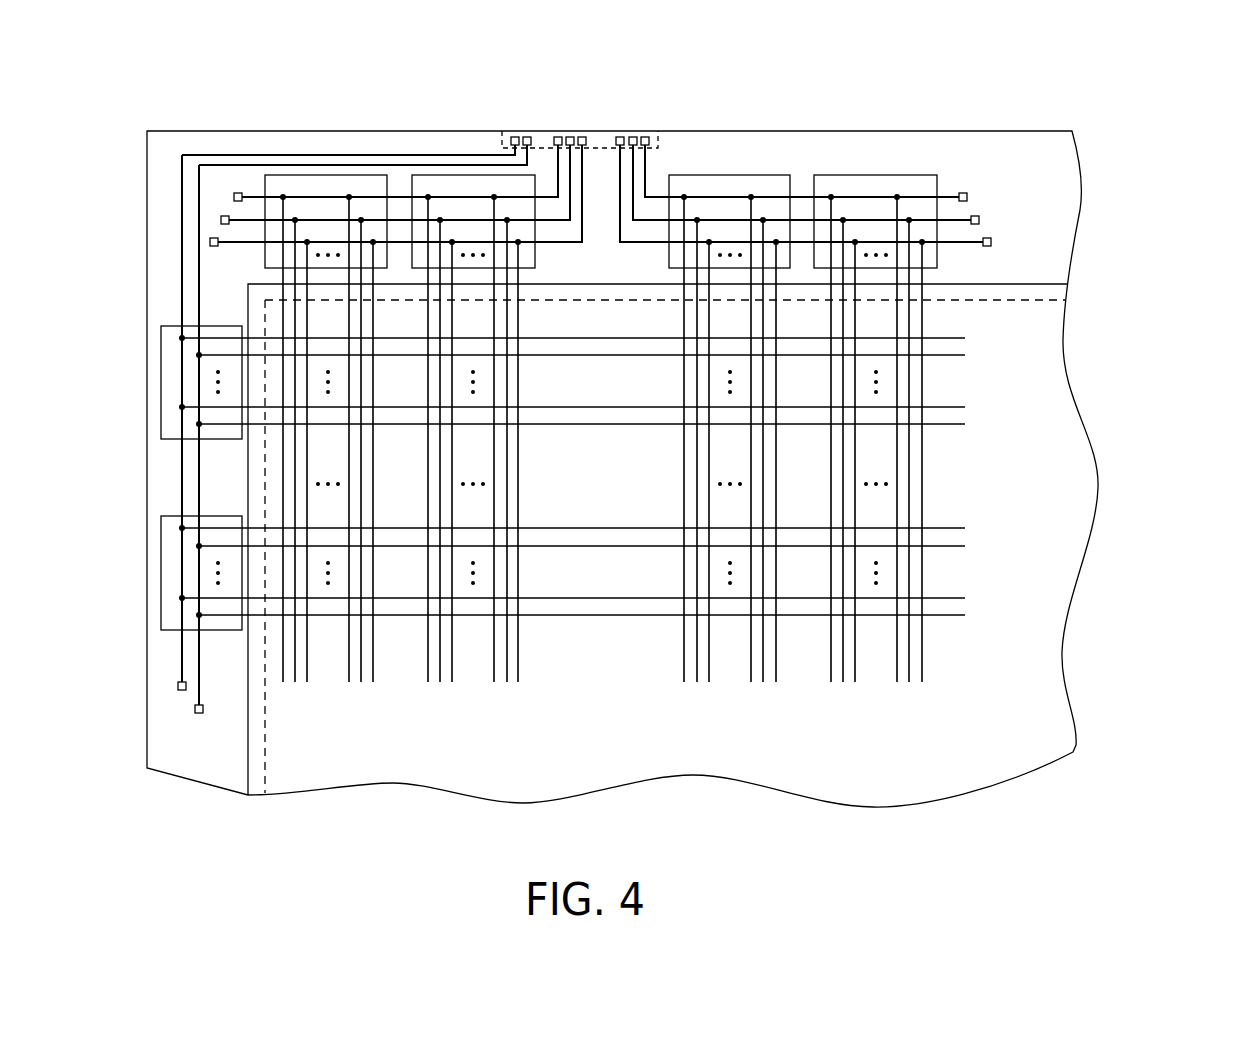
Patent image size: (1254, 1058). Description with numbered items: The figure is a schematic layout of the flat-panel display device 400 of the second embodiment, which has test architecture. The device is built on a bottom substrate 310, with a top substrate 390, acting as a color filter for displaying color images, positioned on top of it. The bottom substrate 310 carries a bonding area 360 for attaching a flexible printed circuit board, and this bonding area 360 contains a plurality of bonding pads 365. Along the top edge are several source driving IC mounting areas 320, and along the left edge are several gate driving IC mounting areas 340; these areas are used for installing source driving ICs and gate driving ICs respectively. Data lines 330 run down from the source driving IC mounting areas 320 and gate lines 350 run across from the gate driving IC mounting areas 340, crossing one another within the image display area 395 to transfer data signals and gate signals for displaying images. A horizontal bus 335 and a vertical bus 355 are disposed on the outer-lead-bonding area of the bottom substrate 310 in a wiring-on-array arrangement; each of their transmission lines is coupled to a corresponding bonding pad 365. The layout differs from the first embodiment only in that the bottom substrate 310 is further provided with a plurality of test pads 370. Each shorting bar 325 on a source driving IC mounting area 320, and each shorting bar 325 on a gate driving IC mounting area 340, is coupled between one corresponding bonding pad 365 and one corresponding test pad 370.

The flat-panel display device 400 is at (1138, 130).
The bottom substrate 310 is at (988, 131).
The source driving IC mounting areas 320 is at (283, 175).
The shorting bars 325 is at (335, 185).
The data lines 330 is at (373, 663).
The horizontal bus 335 is at (406, 183).
The gate driving IC mounting areas 340 is at (161, 404).
The gate lines 350 is at (965, 615).
The vertical bus 355 is at (170, 305).
The bonding area 360 is at (658, 140).
The bonding pads 365 is at (517, 137).
The test pads 370 is at (234, 197).
The top substrate 390 is at (245, 772).
The image display area 395 is at (265, 770).